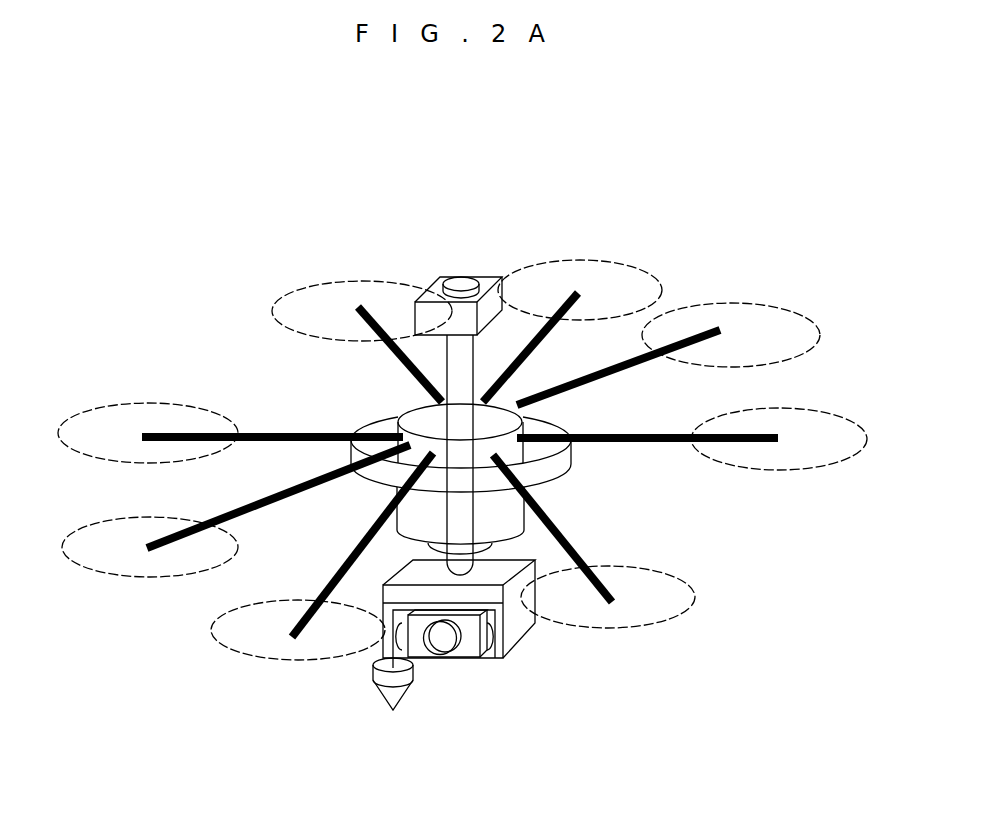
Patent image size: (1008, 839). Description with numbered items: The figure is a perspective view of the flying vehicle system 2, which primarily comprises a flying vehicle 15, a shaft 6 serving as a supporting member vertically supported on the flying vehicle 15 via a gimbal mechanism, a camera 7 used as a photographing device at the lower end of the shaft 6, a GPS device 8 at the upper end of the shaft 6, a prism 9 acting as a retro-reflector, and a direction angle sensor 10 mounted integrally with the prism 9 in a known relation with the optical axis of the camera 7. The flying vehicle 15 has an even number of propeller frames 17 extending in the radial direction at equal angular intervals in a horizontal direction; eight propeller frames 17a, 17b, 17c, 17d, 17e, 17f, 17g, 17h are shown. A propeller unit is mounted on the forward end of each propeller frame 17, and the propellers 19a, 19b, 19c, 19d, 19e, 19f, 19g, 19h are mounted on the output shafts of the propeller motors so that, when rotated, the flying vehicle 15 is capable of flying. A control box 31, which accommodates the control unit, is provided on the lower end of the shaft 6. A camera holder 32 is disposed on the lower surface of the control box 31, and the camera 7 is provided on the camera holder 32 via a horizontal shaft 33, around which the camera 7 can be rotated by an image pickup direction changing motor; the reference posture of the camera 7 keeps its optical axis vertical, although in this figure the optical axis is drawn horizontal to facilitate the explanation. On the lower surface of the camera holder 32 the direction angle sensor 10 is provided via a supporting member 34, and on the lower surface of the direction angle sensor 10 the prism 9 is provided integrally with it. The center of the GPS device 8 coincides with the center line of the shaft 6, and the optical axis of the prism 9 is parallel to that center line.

The flying vehicle system 2 is at (467, 111).
The shaft 6 is at (476, 375).
The GPS device 8 is at (490, 277).
The flying vehicle 15 is at (375, 415).
The propeller frames 17 is at (647, 462).
The propeller frame 17a is at (185, 437).
The propeller frame 17b is at (367, 320).
The propeller frame 17c is at (556, 318).
The propeller frame 17d is at (682, 338).
The propeller frame 17e is at (643, 444).
The propeller frame 17f is at (672, 600).
The propeller frame 17g is at (370, 545).
The propeller frame 17h is at (180, 545).
The propeller 19a is at (138, 404).
The propeller 19b is at (300, 284).
The propeller 19c is at (592, 259).
The propeller 19d is at (745, 303).
The propeller 19e is at (780, 470).
The propeller 19f is at (665, 628).
The propeller 19g is at (250, 660).
The propeller 19h is at (110, 577).
The control box 31 is at (540, 558).
The camera 7 is at (499, 627).
The camera holder 32 is at (492, 636).
The horizontal shaft 33 is at (505, 645).
The direction angle sensor 10 is at (415, 675).
The prism 9 is at (402, 704).
The supporting member 34 is at (380, 688).